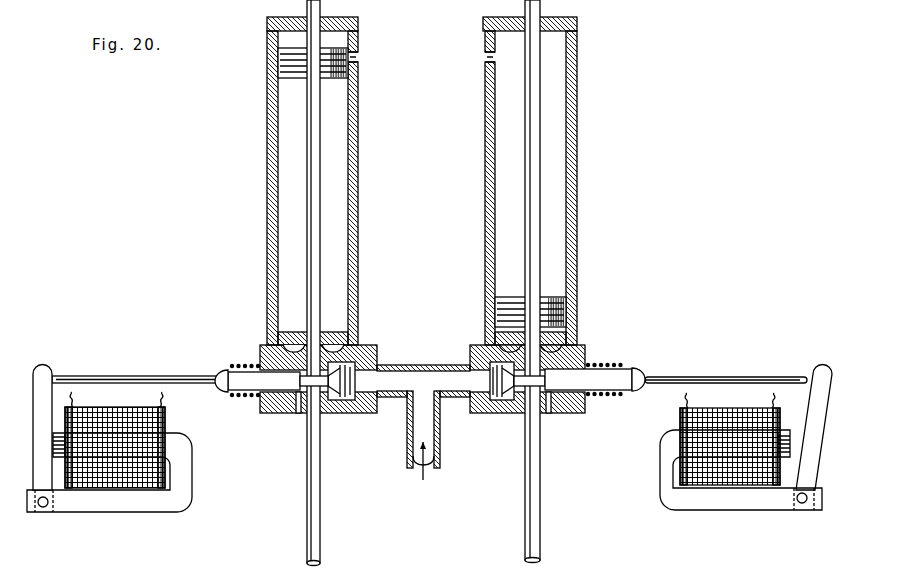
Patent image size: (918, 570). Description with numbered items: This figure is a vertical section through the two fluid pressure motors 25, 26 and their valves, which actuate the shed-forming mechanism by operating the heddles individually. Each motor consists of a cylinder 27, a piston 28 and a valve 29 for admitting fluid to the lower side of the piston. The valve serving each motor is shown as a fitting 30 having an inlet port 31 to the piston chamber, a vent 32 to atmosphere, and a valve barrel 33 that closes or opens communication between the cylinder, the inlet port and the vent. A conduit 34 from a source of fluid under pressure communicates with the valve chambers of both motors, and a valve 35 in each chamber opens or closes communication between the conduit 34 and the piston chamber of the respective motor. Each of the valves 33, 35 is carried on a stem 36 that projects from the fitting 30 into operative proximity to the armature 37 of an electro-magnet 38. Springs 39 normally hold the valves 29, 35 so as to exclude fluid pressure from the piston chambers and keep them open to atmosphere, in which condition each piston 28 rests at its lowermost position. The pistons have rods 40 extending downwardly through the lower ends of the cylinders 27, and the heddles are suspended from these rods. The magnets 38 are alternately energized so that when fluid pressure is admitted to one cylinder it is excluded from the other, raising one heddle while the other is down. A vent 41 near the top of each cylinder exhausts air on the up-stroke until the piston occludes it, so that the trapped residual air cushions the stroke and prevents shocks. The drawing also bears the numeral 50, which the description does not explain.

The fluid pressure motor 25 is at (578, 182).
The fluid pressure motor 26 is at (357, 192).
The cylinder 27 is at (359, 213).
The piston 28 is at (302, 80).
The valve 29 is at (585, 416).
The fitting 30 is at (574, 344).
The inlet port 31 is at (570, 332).
The vent 32 is at (298, 414).
The valve barrel 33 is at (247, 372).
The conduit 34 is at (441, 452).
The valve 35 is at (344, 404).
The stem 36 is at (139, 375).
The armature 37 is at (40, 414).
The electro-magnet 38 is at (122, 482).
The spring 39 is at (247, 398).
The rod 40 is at (307, 505).
The vent 41 is at (359, 60).
The cylinder base 50 is at (268, 344).